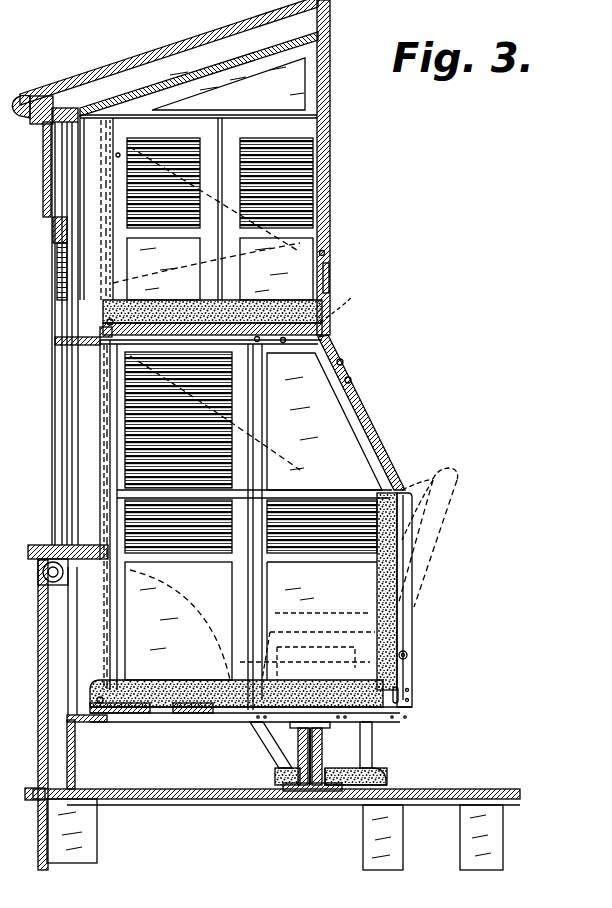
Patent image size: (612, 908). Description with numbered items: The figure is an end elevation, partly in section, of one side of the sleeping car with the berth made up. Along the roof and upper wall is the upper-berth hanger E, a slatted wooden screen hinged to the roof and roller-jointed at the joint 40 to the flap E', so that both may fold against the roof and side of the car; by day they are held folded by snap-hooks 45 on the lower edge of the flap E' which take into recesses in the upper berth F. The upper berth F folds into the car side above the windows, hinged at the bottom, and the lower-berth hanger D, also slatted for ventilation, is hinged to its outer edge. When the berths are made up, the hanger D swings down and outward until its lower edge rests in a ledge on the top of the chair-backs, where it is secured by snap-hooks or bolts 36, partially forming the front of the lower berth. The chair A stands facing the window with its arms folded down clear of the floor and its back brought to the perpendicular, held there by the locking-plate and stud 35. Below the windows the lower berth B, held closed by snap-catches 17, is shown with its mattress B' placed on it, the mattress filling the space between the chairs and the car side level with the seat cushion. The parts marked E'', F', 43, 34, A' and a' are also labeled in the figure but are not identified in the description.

The upper-berth hanger E is at (186, 167).
The flap E' is at (339, 278).
The packing strip E'' is at (97, 210).
The upper berth F is at (69, 326).
The shelf F' is at (204, 321).
The joint 40 is at (326, 254).
The hinge 43 is at (283, 343).
The snap-hooks 45 is at (343, 363).
The louvered shutter 34 is at (251, 345).
The lower-berth hanger D is at (358, 402).
The snap-hooks 36 is at (254, 496).
The chair A is at (417, 587).
The locking-plate and stud 35 is at (420, 691).
The seat bracket A' is at (328, 753).
The pedestal a' is at (314, 756).
The lower berth B is at (251, 722).
The mattress B' is at (236, 687).
The snap-catches 17 is at (114, 517).